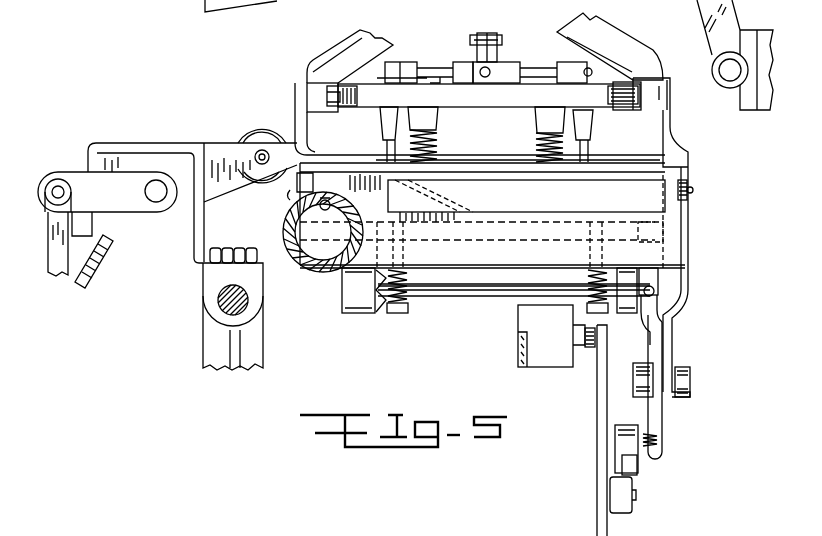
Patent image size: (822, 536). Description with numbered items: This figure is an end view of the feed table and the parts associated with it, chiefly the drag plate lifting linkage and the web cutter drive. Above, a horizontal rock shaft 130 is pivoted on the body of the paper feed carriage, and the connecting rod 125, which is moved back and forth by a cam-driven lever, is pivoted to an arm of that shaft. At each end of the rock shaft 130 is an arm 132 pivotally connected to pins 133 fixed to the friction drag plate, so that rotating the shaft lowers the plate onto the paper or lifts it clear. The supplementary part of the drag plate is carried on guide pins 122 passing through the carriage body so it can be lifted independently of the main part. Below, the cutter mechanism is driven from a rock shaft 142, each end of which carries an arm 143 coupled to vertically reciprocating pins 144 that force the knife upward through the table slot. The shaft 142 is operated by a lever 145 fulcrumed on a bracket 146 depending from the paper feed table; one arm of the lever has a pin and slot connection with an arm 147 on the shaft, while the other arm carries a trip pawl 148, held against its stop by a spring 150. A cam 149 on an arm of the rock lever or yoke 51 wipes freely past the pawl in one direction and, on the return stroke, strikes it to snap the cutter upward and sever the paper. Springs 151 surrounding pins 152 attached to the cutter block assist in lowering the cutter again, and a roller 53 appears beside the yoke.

The rock lever or yoke 51 is at (600, 402).
The roller 53 is at (315, 270).
The guide pins 122 is at (543, 143).
The connecting rod 125 is at (497, 32).
The horizontal rock shaft 130 is at (427, 63).
The arm 132 is at (383, 67).
The pins 133 is at (390, 145).
The rock shaft 142 is at (447, 297).
The arm 143 is at (655, 288).
The vertically reciprocating pins 144 is at (658, 270).
The lever 145 is at (662, 413).
The bracket 146 is at (673, 335).
The arm 147 is at (647, 312).
The trip pawl 148 is at (628, 465).
The cam 149 is at (622, 492).
The spring 150 is at (637, 427).
The springs 151 is at (385, 303).
The pins 152 is at (590, 273).